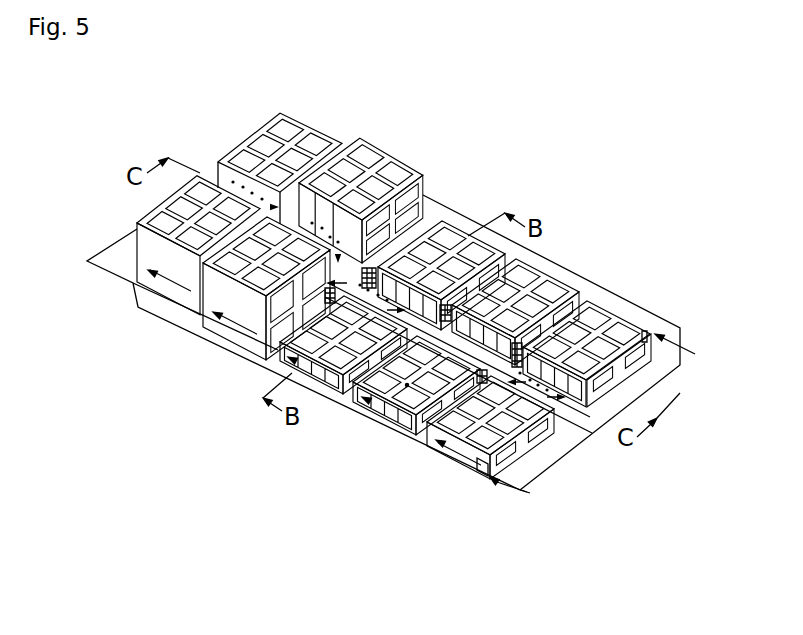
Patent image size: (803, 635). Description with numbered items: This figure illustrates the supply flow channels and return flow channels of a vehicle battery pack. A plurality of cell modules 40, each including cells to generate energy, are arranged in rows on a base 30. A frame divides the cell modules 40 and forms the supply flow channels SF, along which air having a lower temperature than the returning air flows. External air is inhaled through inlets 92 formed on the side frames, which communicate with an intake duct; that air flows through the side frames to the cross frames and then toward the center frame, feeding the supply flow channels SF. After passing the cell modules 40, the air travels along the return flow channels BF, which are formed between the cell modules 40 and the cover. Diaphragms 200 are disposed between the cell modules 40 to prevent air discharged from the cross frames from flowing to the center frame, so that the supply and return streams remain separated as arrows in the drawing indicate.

The diaphragm 200 is at (370, 265).
The cell module 40 is at (545, 300).
The base plate 30 is at (643, 383).
The inlet 92 is at (483, 466).
The return flow channel BF is at (530, 378).
The supply flow channel SF is at (650, 333).